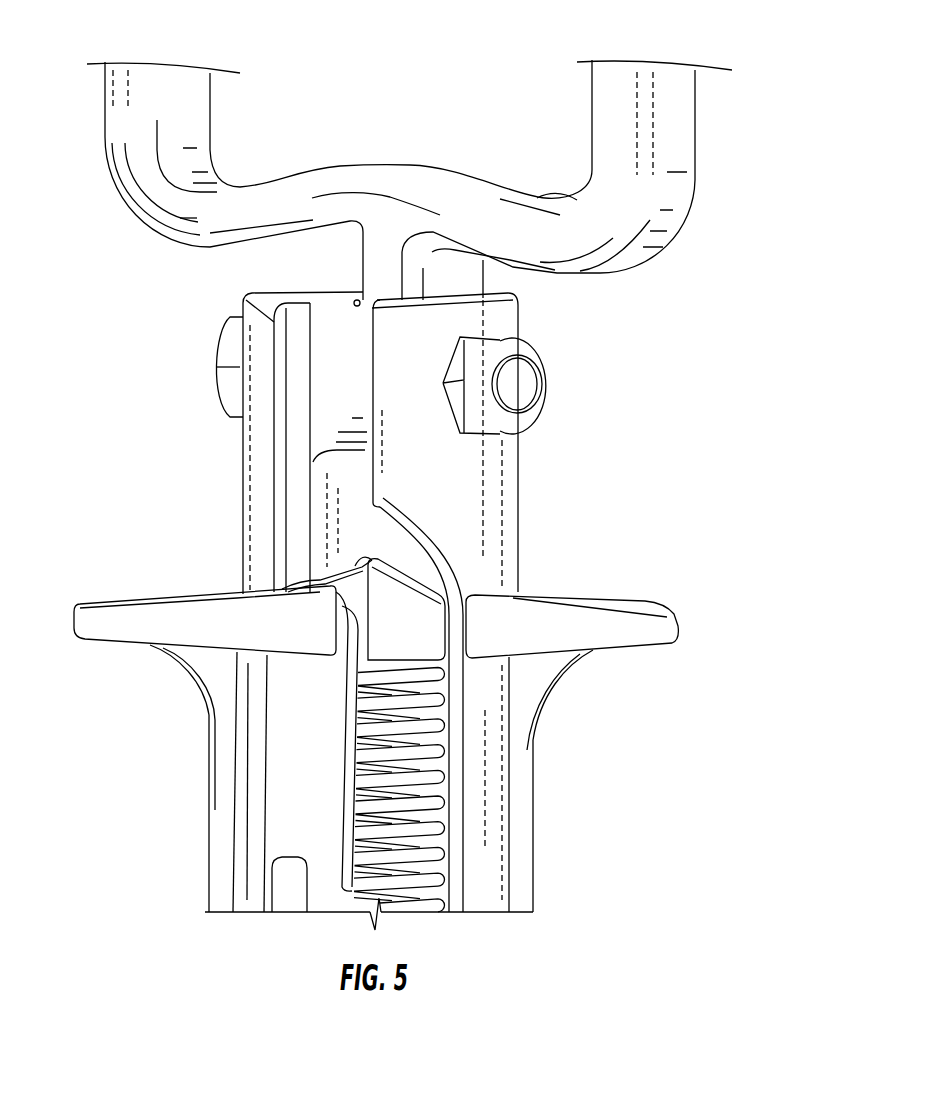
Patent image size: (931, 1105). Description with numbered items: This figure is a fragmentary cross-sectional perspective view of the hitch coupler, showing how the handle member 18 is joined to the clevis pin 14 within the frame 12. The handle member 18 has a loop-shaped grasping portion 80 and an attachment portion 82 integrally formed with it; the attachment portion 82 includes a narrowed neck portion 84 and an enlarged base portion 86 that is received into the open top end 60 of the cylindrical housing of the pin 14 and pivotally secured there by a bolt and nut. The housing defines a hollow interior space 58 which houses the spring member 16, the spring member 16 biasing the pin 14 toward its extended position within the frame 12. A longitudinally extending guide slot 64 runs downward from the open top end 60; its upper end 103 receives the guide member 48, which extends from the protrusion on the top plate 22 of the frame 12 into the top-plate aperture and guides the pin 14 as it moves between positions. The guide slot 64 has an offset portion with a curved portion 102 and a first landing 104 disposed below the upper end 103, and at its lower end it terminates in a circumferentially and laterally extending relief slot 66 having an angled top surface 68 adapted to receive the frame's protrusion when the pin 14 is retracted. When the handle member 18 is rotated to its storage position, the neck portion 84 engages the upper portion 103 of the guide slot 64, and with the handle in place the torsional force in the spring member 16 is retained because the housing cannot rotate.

The handle member 18 is at (672, 183).
The loop-shaped grasping portion 80 is at (545, 201).
The narrowed neck portion 84 is at (382, 273).
The open top end 60 is at (253, 293).
The guide slot 64 is at (323, 492).
The enlarged base portion 86 is at (337, 363).
The attachment portion 82 is at (343, 388).
The hollow interior space 58 is at (365, 547).
The upper end of guide slot 103 is at (358, 472).
The curved portion 102 is at (446, 550).
The first landing 104 is at (337, 590).
The top plate 22 is at (117, 605).
The frame 12 is at (650, 602).
The guide member 48 is at (400, 608).
The clevis pin 14 is at (253, 783).
The angled top surface 68 is at (343, 893).
The relief slot 66 is at (303, 902).
The spring member 16 is at (430, 835).